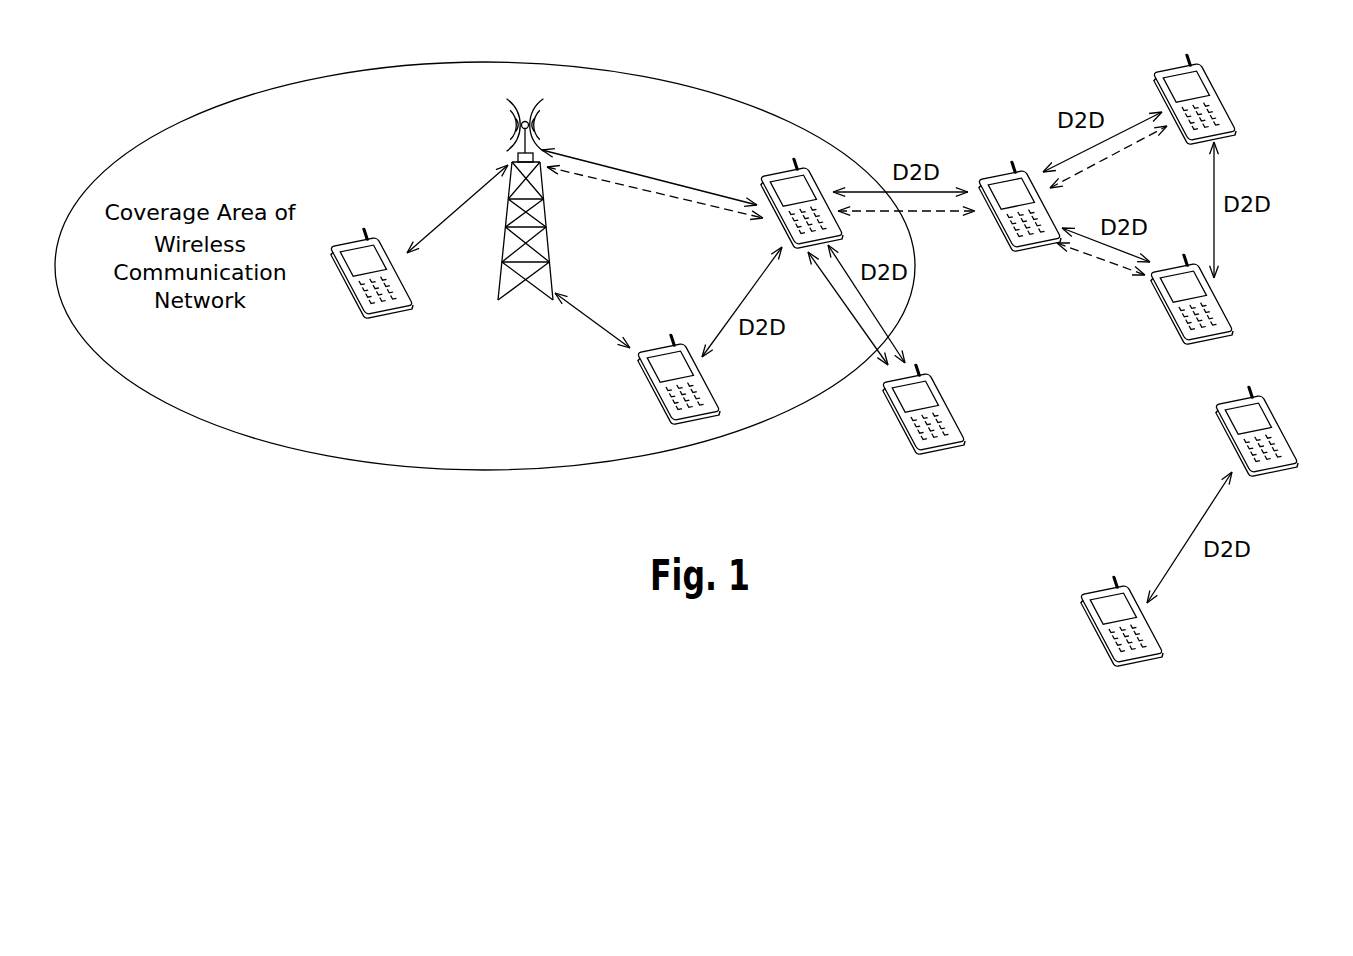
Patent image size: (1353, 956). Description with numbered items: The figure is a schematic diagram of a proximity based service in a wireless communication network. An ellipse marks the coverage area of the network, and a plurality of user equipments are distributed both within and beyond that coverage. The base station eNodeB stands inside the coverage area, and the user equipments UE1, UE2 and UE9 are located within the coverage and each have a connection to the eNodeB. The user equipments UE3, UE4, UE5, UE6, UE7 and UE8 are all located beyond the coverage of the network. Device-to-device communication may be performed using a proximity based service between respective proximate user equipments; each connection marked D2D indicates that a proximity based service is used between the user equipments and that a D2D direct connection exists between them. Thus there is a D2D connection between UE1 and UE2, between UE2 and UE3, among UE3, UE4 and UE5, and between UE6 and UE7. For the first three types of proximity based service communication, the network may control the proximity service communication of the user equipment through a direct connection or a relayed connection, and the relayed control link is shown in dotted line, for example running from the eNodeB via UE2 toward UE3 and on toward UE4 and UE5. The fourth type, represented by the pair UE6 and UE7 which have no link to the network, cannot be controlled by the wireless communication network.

The base station eNodeB is at (523, 218).
The user equipment UE1 is at (662, 379).
The user equipment UE2 is at (786, 196).
The user equipment UE3 is at (1016, 218).
The user equipment UE4 is at (1206, 99).
The user equipment UE5 is at (1189, 311).
The user equipment UE6 is at (1270, 431).
The user equipment UE7 is at (1119, 637).
The user equipment UE8 is at (921, 424).
The user equipment UE9 is at (368, 288).